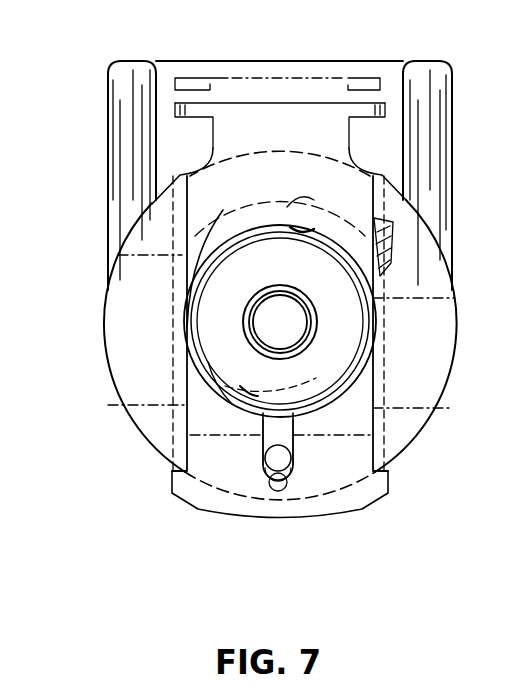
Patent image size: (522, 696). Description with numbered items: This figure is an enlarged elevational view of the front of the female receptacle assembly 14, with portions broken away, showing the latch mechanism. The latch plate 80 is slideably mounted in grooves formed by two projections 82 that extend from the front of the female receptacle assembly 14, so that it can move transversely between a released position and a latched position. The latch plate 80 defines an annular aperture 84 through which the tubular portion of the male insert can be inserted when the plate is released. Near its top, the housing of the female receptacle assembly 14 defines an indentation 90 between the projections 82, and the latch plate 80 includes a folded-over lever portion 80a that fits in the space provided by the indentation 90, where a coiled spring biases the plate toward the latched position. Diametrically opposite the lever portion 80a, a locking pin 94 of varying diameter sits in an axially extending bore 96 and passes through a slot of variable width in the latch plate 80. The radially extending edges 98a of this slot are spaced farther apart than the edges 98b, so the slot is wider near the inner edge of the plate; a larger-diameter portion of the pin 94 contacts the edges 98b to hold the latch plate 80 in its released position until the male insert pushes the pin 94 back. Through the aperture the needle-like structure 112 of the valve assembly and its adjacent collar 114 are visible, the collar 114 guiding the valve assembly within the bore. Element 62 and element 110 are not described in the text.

The female receptacle assembly 14 is at (88, 177).
The latch plate 80 is at (212, 517).
The folded-over lever portion 80a is at (365, 89).
The indentation 90 is at (381, 142).
The projections 82 is at (177, 421).
The annular aperture 84 is at (310, 222).
The ring 62 is at (318, 247).
The hub 110 is at (200, 337).
The needle-like structure 112 is at (254, 299).
The collar 114 is at (222, 383).
The axially extending bore 96 is at (292, 440).
The radially extending edges 98a is at (262, 428).
The edges 98b is at (268, 484).
The locking pin 94 is at (284, 466).